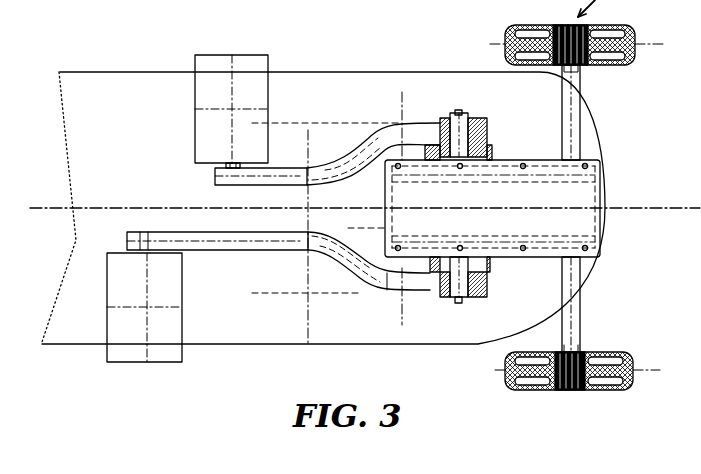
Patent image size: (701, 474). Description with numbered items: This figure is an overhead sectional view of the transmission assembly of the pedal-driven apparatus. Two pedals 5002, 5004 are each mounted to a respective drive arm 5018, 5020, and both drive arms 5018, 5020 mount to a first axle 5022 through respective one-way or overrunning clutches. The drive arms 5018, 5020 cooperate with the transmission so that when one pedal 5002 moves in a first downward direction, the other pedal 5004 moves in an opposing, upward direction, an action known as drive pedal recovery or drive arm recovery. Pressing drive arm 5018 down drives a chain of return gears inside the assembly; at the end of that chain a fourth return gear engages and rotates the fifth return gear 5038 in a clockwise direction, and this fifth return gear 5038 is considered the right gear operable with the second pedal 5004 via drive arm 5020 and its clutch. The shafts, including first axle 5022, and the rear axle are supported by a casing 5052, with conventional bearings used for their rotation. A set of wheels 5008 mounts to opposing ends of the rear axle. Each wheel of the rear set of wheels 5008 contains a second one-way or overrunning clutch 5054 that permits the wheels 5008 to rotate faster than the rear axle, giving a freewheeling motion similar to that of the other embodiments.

The pedal 5002 is at (165, 353).
The pedal 5004 is at (205, 67).
The set of wheels 5008 is at (625, 35).
The drive arm 5018 is at (237, 240).
The drive arm 5020 is at (282, 172).
The first axle 5022 is at (452, 127).
The fifth return gear 5038 is at (492, 153).
The casing 5052 is at (583, 188).
The second one-way clutch 5054 is at (583, 405).